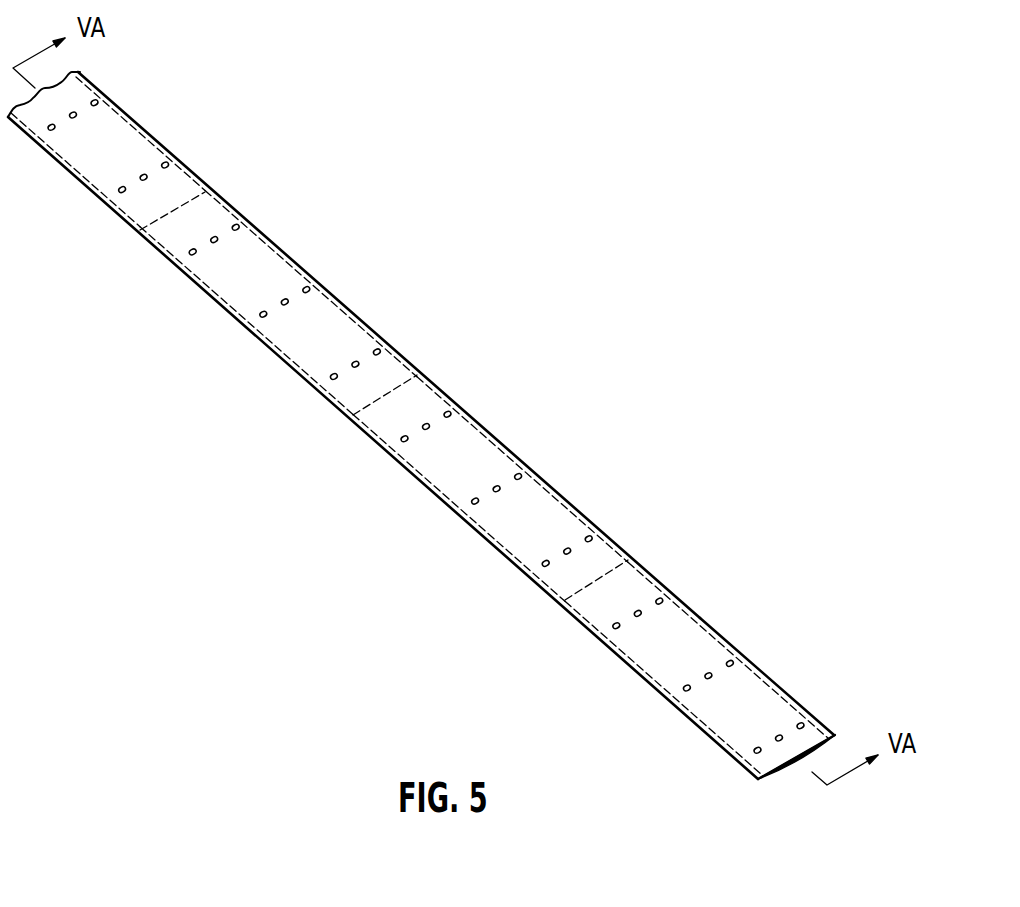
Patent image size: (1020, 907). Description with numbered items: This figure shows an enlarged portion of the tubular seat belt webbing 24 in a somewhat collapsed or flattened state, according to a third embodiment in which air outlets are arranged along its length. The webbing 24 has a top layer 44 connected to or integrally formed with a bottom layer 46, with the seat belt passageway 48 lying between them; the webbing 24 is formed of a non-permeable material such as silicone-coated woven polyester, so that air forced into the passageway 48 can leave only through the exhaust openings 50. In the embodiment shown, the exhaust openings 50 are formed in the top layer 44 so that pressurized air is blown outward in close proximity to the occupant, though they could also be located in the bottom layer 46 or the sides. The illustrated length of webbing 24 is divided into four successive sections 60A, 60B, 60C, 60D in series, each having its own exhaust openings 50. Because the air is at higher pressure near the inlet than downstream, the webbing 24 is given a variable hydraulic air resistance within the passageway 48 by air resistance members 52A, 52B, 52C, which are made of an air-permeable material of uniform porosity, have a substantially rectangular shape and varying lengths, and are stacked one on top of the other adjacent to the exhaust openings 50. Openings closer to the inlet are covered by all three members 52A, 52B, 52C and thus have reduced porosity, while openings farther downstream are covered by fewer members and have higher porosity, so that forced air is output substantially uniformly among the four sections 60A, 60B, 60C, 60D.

The seat belt webbing 24 is at (108, 167).
The top layer 44 is at (748, 698).
The bottom layer 46 is at (778, 777).
The seat belt passageway 48 is at (800, 763).
The exhaust openings 50 is at (236, 227).
The hydraulic air resistance member 52A is at (167, 212).
The hydraulic air resistance member 52B is at (382, 398).
The hydraulic air resistance member 52C is at (590, 585).
The first section of seat belt webbing 60A is at (747, 647).
The second section of seat belt webbing 60B is at (540, 462).
The third section of seat belt webbing 60C is at (343, 288).
The fourth section of seat belt webbing 60D is at (157, 120).